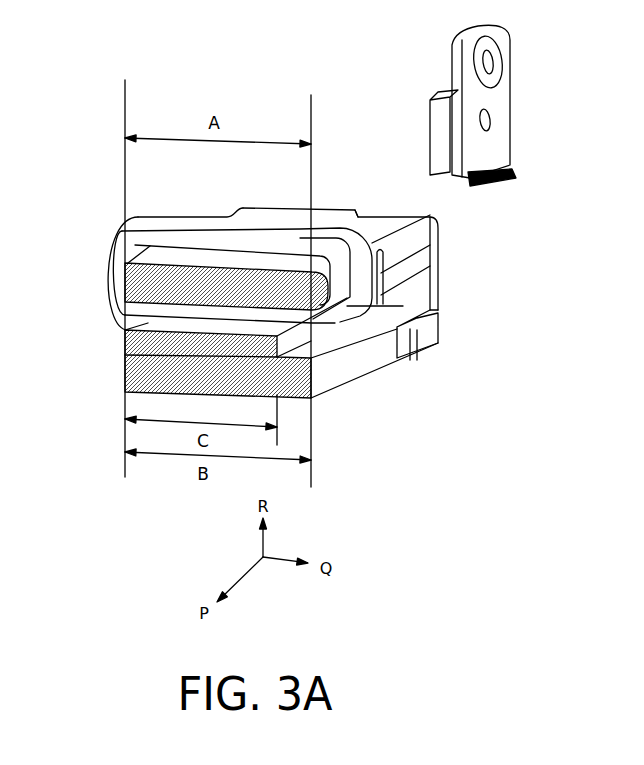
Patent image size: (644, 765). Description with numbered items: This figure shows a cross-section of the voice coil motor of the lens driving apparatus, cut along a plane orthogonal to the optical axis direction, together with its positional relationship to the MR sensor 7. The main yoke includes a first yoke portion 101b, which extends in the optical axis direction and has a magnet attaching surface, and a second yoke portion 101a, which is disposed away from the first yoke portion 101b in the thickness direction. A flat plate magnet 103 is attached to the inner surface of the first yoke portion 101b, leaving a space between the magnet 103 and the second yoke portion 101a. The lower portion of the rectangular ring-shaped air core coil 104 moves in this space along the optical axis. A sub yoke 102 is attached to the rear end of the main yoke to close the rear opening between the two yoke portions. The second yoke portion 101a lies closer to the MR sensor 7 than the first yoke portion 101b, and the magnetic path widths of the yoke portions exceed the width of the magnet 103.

The MR sensor 7 is at (445, 117).
The second yoke portion 101a is at (440, 240).
The first yoke portion 101b is at (373, 356).
The sub yoke 102 is at (438, 262).
The magnet 103 is at (384, 301).
The air core coil 104 is at (197, 216).